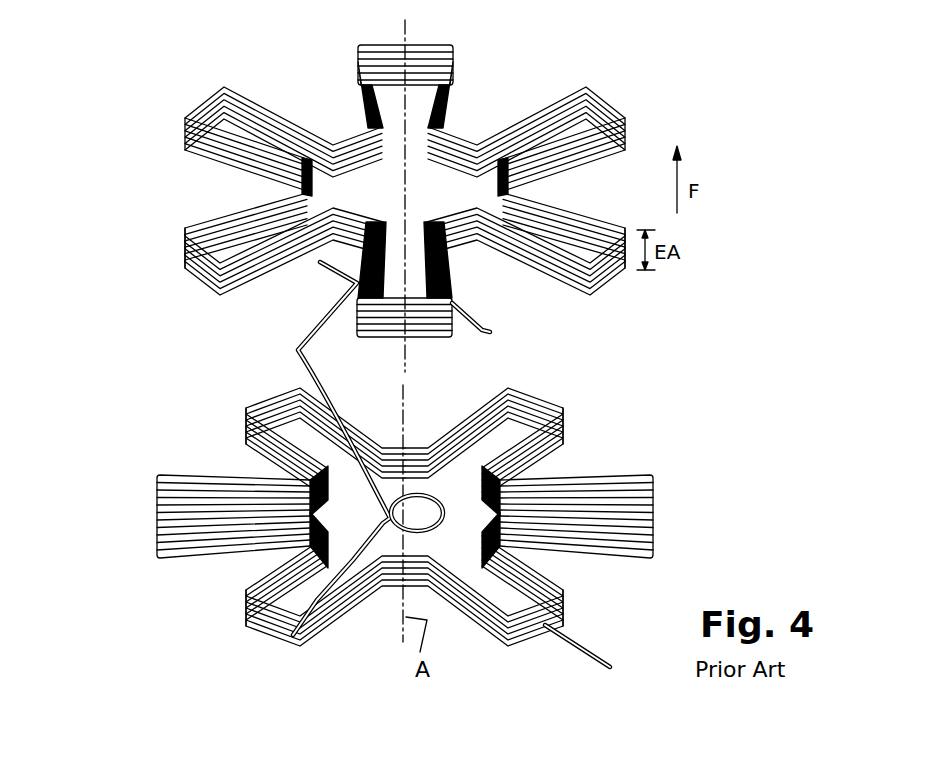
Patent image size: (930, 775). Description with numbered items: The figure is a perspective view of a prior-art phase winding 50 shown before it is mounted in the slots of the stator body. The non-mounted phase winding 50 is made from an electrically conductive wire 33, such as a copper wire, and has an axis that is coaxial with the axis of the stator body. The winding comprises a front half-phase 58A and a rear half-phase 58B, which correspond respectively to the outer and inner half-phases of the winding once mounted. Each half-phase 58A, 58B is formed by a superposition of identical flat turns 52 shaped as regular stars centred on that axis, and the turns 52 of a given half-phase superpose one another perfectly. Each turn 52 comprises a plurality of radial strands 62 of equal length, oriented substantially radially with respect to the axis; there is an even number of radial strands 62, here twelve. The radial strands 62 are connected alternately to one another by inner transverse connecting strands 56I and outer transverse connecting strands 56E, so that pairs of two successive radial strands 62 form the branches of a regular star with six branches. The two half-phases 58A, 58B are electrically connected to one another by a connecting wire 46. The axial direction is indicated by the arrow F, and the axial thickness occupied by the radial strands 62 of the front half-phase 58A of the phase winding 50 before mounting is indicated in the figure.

The phase winding 50 is at (115, 343).
The flat turn 52 is at (200, 160).
The connecting wire 46 is at (297, 332).
The inner transverse connecting strand 56I is at (453, 130).
The outer transverse connecting strand 56E is at (608, 273).
The front half-phase 58A is at (640, 118).
The rear half-phase 58B is at (652, 468).
The radial strand 62 is at (500, 252).
The electrically conductive wire 33 is at (487, 333).